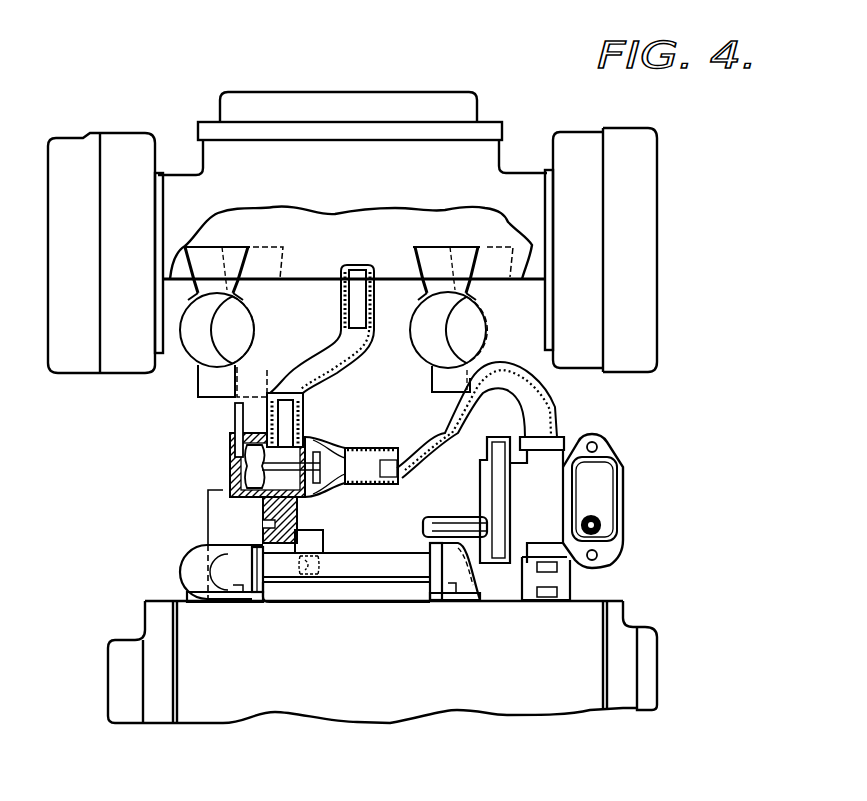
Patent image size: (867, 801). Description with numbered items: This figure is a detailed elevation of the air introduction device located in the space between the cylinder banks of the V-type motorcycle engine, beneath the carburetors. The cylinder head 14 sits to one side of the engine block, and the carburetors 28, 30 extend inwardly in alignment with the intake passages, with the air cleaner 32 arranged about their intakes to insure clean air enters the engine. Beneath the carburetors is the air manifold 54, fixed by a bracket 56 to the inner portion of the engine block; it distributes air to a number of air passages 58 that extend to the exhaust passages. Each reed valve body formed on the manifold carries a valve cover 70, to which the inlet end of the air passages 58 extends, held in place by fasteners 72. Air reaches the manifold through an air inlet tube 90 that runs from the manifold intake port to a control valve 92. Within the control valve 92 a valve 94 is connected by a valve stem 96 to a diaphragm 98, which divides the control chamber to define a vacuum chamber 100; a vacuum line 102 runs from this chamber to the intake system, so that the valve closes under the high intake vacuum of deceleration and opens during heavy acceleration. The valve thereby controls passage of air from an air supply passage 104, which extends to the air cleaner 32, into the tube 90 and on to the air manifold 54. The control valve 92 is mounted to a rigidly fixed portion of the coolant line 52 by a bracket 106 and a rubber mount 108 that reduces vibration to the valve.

The cylinder head 14 is at (208, 507).
The carburetor 28 is at (443, 325).
The carburetor 30 is at (257, 323).
The air cleaner 32 is at (107, 378).
The coolant line 52 is at (195, 568).
The air manifold 54 is at (623, 507).
The bracket 56 is at (523, 580).
The air passages 58 is at (450, 521).
The valve cover 70 is at (597, 477).
The fasteners 72 is at (600, 433).
The air inlet tube 90 is at (427, 460).
The control valve 92 is at (333, 445).
The valve 94 is at (305, 440).
The valve stem 96 is at (352, 449).
The diaphragm 98 is at (243, 467).
The vacuum chamber 100 is at (232, 487).
The vacuum line 102 is at (235, 418).
The air supply passage 104 is at (360, 350).
The bracket 106 is at (320, 540).
The rubber mount 108 is at (263, 523).